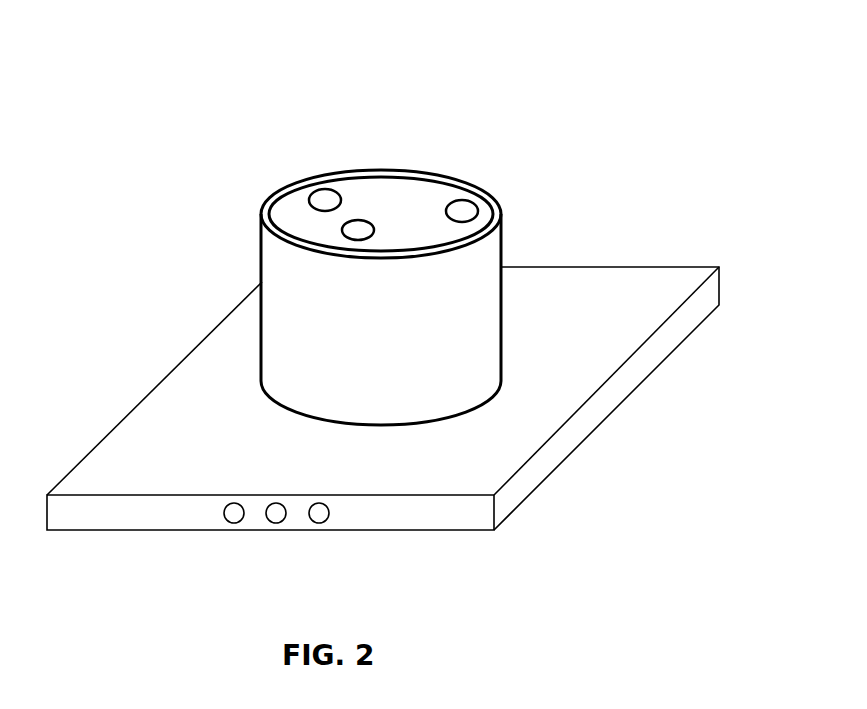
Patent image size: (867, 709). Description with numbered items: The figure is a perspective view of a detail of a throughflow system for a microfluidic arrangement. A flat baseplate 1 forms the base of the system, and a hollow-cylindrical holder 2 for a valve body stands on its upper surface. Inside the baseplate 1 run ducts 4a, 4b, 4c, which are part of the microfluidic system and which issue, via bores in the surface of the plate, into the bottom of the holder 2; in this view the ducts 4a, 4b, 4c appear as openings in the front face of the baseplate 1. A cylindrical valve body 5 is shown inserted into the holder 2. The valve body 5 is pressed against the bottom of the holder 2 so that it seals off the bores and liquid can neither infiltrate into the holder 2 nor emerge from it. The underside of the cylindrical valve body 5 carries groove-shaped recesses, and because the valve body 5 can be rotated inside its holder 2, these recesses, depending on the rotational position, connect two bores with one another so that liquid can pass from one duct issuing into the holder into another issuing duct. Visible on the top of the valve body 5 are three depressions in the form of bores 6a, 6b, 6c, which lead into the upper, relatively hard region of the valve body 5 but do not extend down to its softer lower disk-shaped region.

The baseplate 1 is at (614, 310).
The holder 2 is at (503, 257).
The duct 4a is at (234, 523).
The duct 4b is at (276, 523).
The duct 4c is at (319, 523).
The cylindrical valve body 5 is at (418, 200).
The bore 6a is at (297, 182).
The bore 6b is at (363, 222).
The bore 6c is at (468, 196).